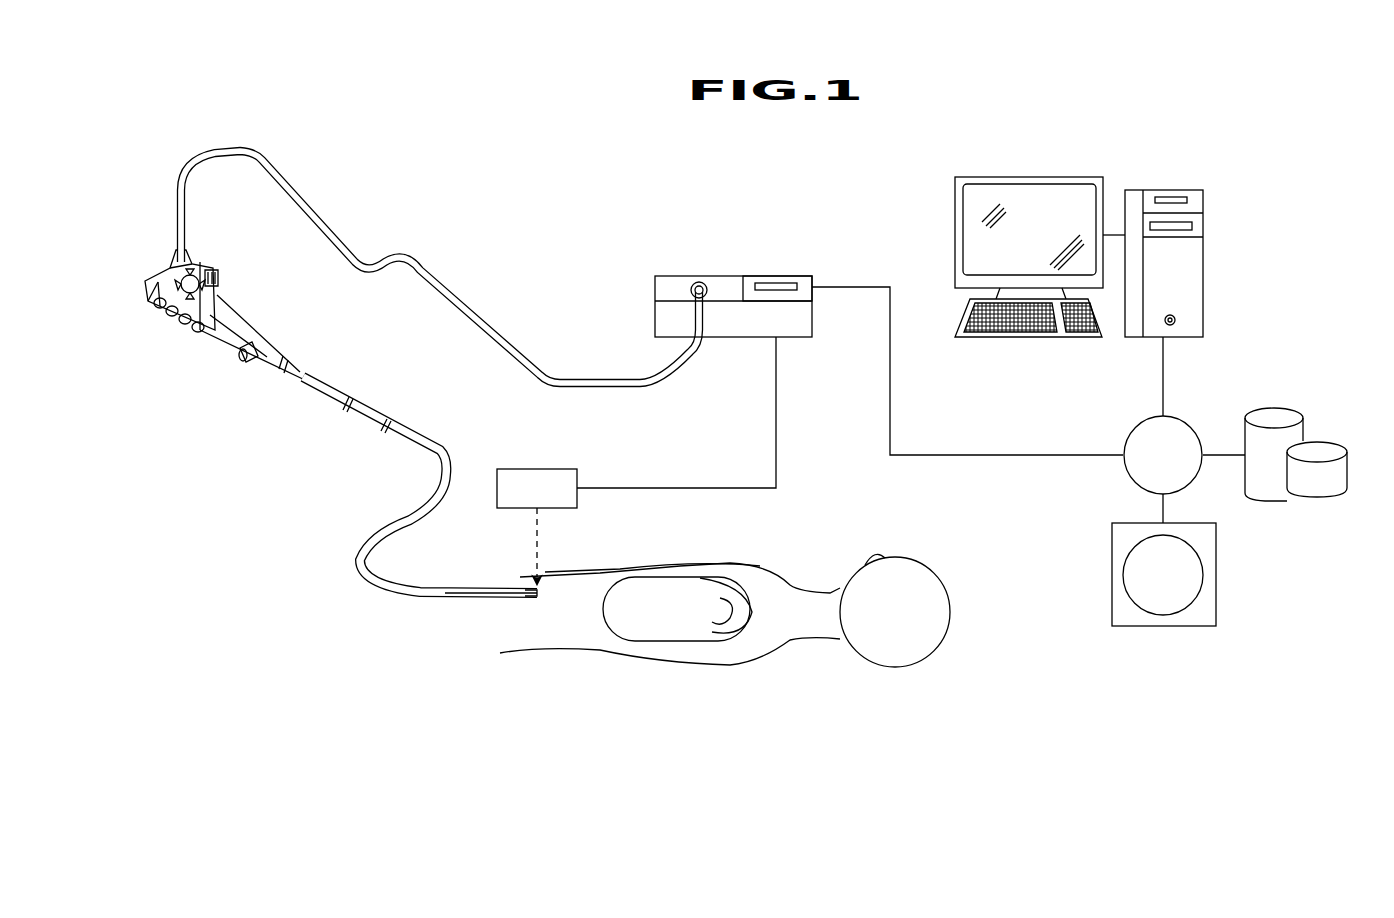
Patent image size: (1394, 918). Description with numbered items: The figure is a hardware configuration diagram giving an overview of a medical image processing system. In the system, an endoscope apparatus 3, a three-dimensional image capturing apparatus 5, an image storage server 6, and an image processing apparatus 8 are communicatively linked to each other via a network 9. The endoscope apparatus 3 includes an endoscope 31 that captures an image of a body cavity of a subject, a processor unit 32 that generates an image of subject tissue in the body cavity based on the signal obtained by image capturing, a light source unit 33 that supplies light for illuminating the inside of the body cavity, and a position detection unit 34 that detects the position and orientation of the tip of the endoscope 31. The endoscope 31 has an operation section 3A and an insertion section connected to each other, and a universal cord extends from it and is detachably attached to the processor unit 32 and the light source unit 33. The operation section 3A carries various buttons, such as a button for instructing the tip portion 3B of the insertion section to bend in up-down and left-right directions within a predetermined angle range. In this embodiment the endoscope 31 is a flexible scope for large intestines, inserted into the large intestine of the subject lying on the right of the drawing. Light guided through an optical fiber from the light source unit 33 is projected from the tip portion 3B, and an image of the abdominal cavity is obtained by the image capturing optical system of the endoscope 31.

The endoscope apparatus 3 is at (556, 183).
The operation section 3A is at (190, 348).
The endoscope 31 is at (325, 418).
The tip portion 3B is at (540, 593).
The processor unit 32 is at (815, 278).
The light source unit 33 is at (815, 316).
The position detection unit 34 is at (565, 468).
The image processing apparatus 8 is at (1175, 190).
The network 9 is at (1190, 418).
The image storage server 6 is at (1275, 500).
The three-dimensional image capturing apparatus 5 is at (1152, 628).